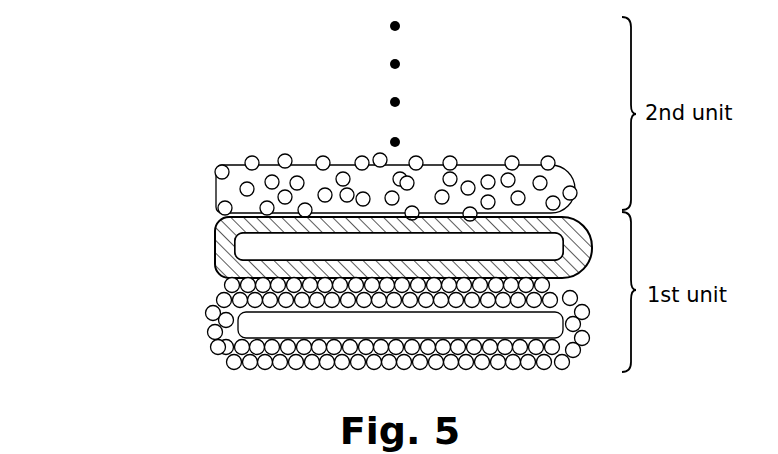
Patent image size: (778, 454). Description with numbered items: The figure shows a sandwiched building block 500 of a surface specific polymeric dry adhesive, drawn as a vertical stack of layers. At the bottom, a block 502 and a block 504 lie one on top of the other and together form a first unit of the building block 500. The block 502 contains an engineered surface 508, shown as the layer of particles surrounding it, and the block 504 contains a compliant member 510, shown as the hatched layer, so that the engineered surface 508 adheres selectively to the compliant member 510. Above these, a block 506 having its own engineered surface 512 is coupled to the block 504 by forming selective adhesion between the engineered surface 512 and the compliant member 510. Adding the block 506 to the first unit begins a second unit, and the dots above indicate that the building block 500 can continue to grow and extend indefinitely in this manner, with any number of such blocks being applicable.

The sandwiched building block 500 is at (75, 48).
The block 502 is at (383, 336).
The block 504 is at (383, 257).
The block 506 is at (216, 192).
The engineered surface 508 is at (212, 313).
The compliant member 510 is at (217, 250).
The engineered surface 512 is at (216, 170).